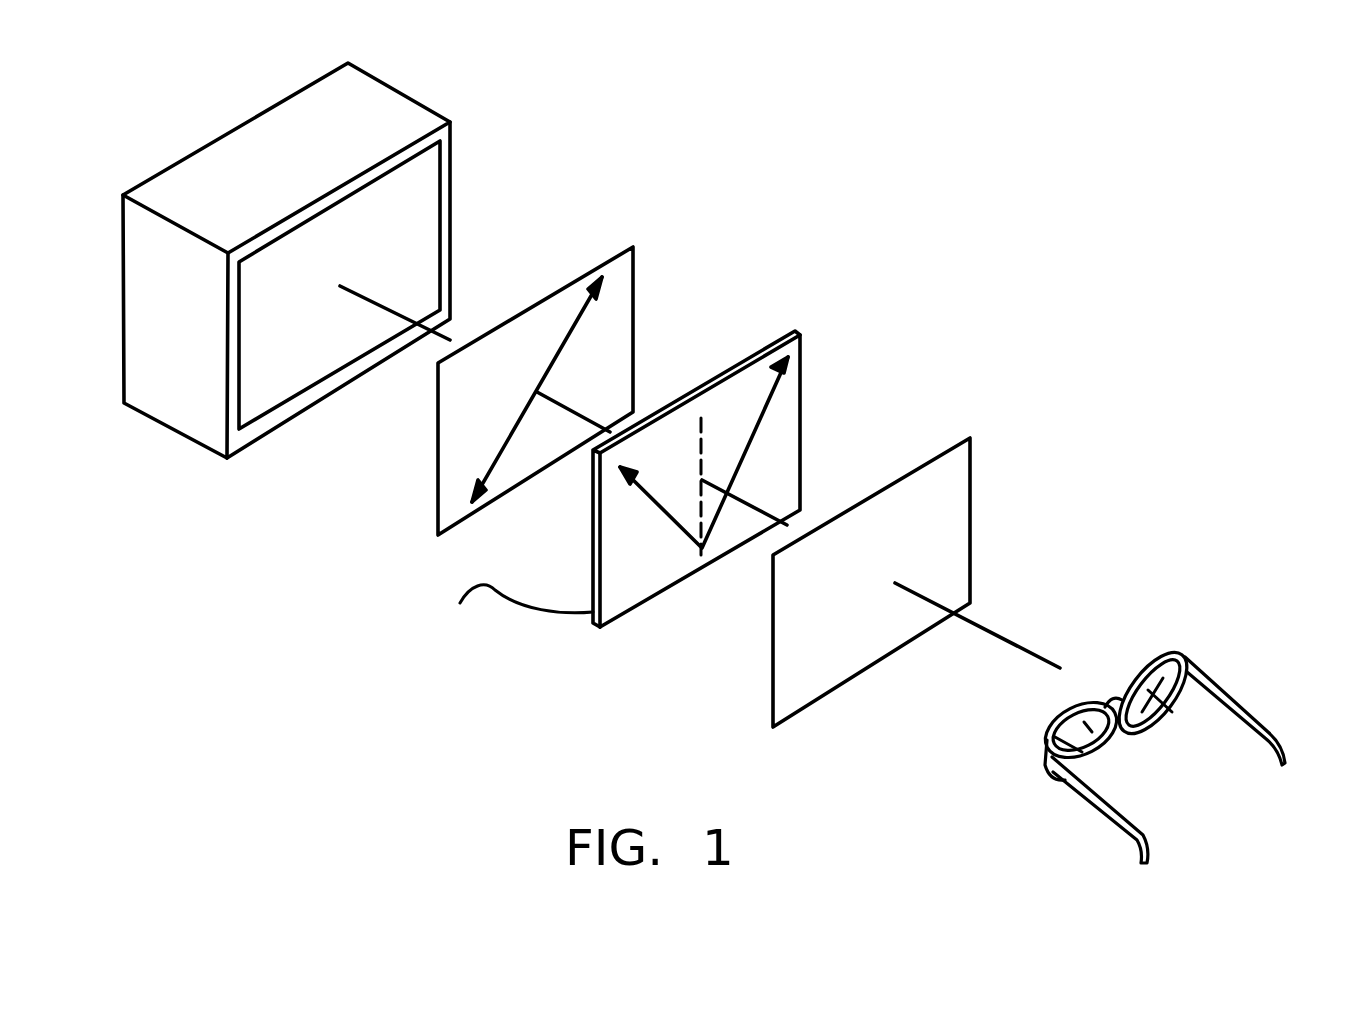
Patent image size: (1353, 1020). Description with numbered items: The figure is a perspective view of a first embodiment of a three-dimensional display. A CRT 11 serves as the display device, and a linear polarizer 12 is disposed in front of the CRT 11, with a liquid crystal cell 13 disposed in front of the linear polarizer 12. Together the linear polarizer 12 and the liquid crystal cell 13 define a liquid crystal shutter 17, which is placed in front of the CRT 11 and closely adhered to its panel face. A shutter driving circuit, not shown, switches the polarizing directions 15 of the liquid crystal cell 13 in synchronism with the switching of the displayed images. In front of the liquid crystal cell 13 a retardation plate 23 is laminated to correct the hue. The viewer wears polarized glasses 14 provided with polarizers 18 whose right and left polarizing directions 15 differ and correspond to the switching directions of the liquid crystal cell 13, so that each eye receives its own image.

The CRT 11 is at (383, 103).
The linear polarizer 12 is at (625, 287).
The liquid crystal cell 13 is at (788, 380).
The polarized glasses 14 is at (1189, 731).
The polarizing directions 15 is at (570, 337).
The liquid crystal shutter 17 is at (679, 460).
The polarizers 18 is at (1138, 690).
The retardation plate 23 is at (947, 507).